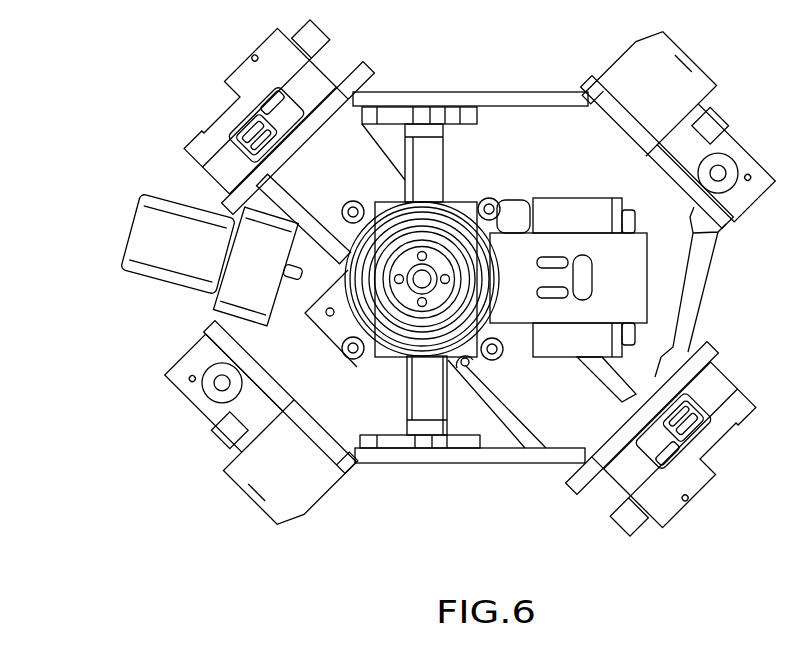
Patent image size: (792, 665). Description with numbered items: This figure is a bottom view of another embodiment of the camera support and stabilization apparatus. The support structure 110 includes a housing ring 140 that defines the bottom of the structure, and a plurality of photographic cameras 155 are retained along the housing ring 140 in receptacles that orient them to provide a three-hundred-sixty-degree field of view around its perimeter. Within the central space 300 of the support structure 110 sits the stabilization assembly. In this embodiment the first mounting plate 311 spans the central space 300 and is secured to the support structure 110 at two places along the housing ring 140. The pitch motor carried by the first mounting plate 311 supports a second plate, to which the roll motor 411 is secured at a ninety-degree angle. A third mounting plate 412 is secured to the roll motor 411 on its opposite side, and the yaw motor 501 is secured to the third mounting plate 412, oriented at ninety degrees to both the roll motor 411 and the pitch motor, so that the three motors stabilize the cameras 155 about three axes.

The support structure 110 is at (386, 496).
The housing ring 140 is at (556, 92).
The photographic cameras 155 is at (198, 410).
The central space 300 is at (525, 128).
The first mounting plate 311 is at (455, 142).
The roll motor 411 is at (633, 338).
The third mounting plate 412 is at (650, 270).
The yaw motor 501 is at (432, 357).